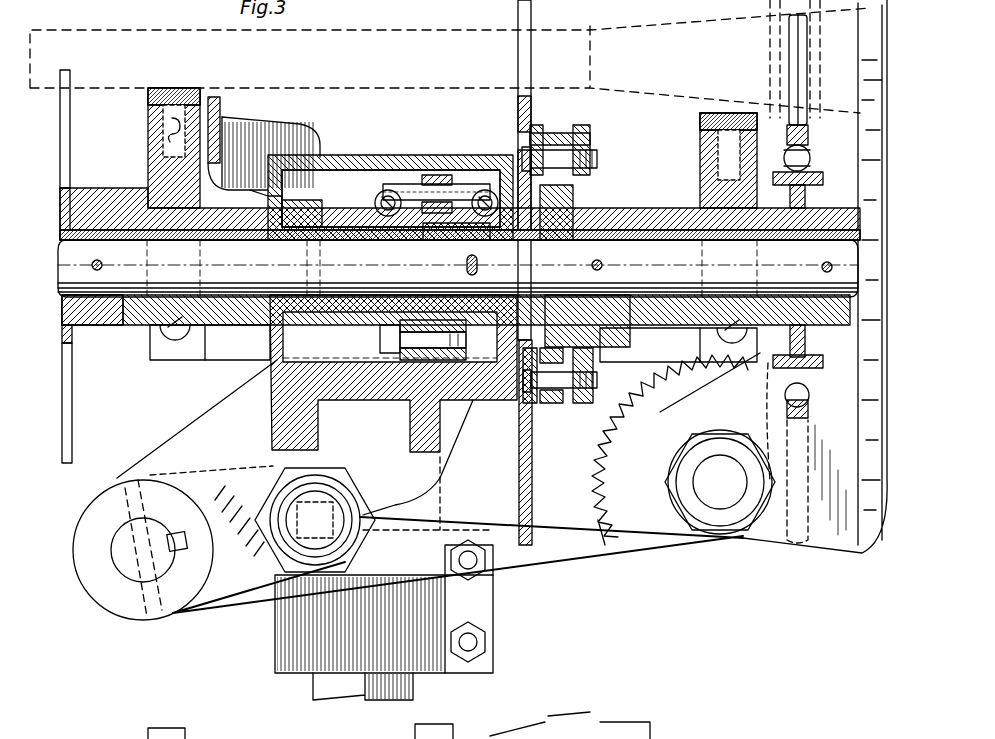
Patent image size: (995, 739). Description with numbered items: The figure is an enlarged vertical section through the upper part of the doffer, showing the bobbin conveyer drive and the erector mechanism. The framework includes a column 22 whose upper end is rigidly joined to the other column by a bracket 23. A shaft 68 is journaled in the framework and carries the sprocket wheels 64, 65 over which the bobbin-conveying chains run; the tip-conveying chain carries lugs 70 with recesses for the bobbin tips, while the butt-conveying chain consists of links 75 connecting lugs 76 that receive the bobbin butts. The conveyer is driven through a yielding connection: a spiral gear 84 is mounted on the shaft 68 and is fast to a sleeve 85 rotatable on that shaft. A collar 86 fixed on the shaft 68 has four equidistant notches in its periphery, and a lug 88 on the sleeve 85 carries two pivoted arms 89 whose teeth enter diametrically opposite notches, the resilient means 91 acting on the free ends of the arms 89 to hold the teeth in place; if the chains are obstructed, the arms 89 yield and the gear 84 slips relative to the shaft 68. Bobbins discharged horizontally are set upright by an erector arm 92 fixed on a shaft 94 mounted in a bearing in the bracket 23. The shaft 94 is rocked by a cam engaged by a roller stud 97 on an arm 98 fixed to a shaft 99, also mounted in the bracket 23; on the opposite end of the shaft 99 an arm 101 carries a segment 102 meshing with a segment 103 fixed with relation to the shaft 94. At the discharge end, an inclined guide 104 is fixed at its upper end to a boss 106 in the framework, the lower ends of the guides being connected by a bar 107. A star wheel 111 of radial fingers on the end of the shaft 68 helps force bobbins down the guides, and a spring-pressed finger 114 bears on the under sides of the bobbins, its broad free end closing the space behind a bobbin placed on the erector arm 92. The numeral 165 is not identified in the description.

The column 22 is at (330, 686).
The bracket 23 is at (438, 454).
The sprocket wheel 64 is at (563, 190).
The sprocket wheel 65 is at (790, 197).
The shaft 68 is at (76, 263).
The lug 70 is at (518, 5).
The link 75 is at (808, 137).
The lug 76 is at (790, 50).
The spiral gear 84 is at (330, 154).
The sleeve 85 is at (352, 227).
The collar 86 is at (455, 242).
The lug 88 is at (393, 373).
The arm 89 is at (437, 176).
The resilient means 91 is at (475, 190).
The erector arm 92 is at (890, 50).
The shaft 94 is at (720, 482).
The roller stud 97 is at (265, 532).
The arm 98 is at (243, 562).
The shaft 99 is at (128, 560).
The arm 101 is at (508, 555).
The segment 102 is at (603, 545).
The segment 103 is at (670, 446).
The inclined guide 104 is at (190, 88).
The boss 106 is at (150, 137).
The bar 107 is at (227, 353).
The star wheel 111 is at (70, 128).
The spring-pressed finger 114 is at (276, 113).
The bracket top 165 is at (727, 113).